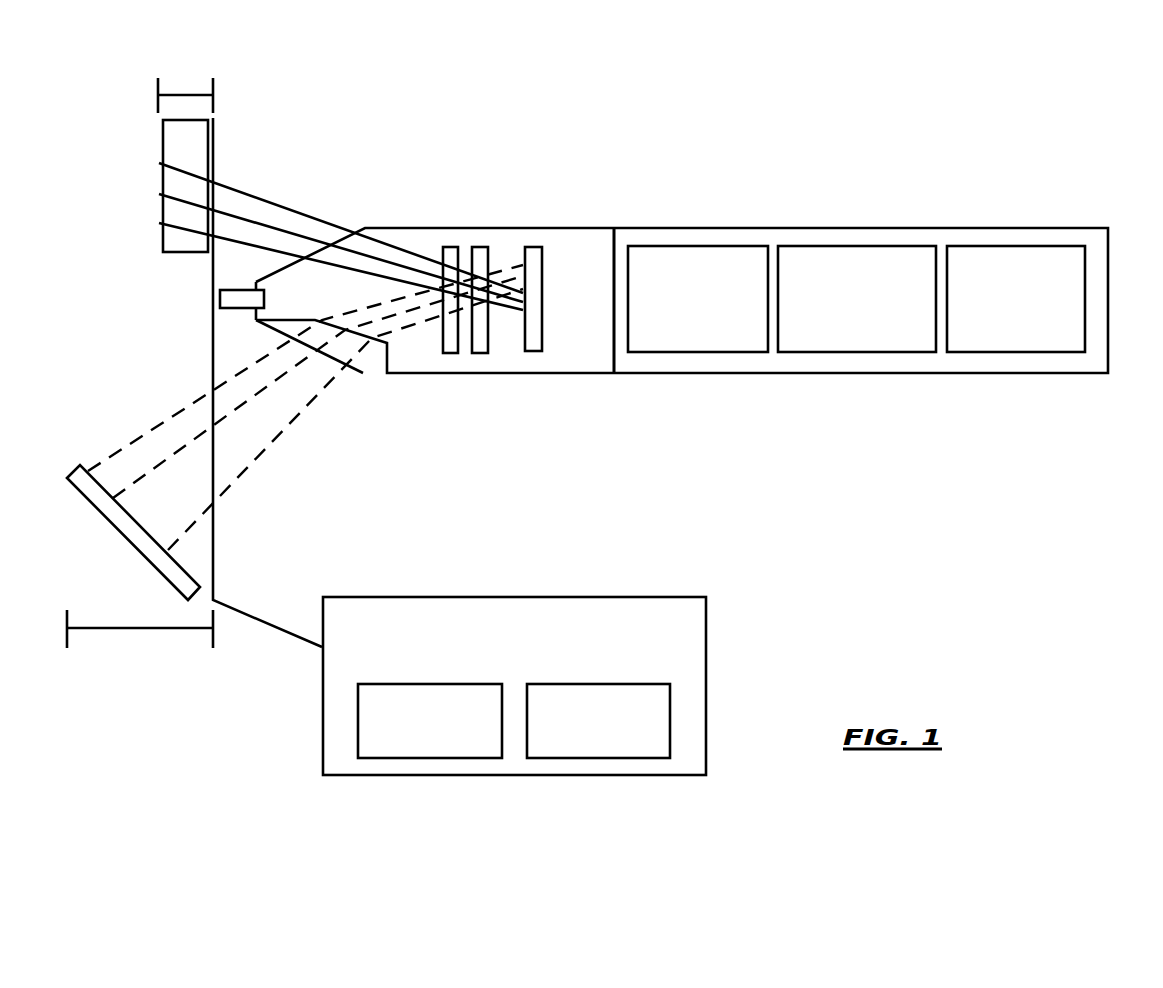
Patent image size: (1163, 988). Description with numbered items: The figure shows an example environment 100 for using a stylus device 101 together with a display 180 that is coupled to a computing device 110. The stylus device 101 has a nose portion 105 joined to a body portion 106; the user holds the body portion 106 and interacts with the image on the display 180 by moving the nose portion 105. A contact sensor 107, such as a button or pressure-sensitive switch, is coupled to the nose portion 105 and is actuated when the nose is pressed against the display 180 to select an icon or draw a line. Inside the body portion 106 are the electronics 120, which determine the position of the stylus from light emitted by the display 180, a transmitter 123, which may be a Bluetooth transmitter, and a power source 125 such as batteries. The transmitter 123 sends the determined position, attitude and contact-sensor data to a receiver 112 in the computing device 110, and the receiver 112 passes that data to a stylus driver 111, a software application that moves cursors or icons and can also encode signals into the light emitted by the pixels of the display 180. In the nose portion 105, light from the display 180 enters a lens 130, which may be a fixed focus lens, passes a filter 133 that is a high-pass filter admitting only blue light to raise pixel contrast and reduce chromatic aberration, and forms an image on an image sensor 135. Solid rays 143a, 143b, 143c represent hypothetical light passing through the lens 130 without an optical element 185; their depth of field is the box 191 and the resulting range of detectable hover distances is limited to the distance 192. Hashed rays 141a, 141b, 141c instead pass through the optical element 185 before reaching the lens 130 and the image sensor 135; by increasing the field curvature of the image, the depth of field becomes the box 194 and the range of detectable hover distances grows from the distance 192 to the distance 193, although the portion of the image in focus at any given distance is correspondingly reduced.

The environment 100 is at (912, 660).
The stylus device 101 is at (640, 293).
The nose portion 105 is at (403, 375).
The body portion 106 is at (657, 375).
The contact sensor 107 is at (228, 297).
The computing device 110 is at (514, 686).
The stylus driver 111 is at (430, 721).
The receiver 112 is at (598, 721).
The electronics 120 is at (698, 299).
The transmitter 123 is at (857, 299).
The power source 125 is at (1016, 299).
The lens 130 is at (450, 247).
The filter 133 is at (488, 247).
The image sensor 135 is at (545, 248).
The ray 141a is at (110, 453).
The ray 141b is at (183, 458).
The ray 141c is at (287, 425).
The ray 143a is at (255, 234).
The ray 143b is at (278, 230).
The ray 143c is at (303, 260).
The display 180 is at (213, 557).
The optical element 185 is at (357, 373).
The box 191 is at (163, 252).
The distance 192 is at (183, 92).
The distance 193 is at (130, 630).
The box 194 is at (123, 538).